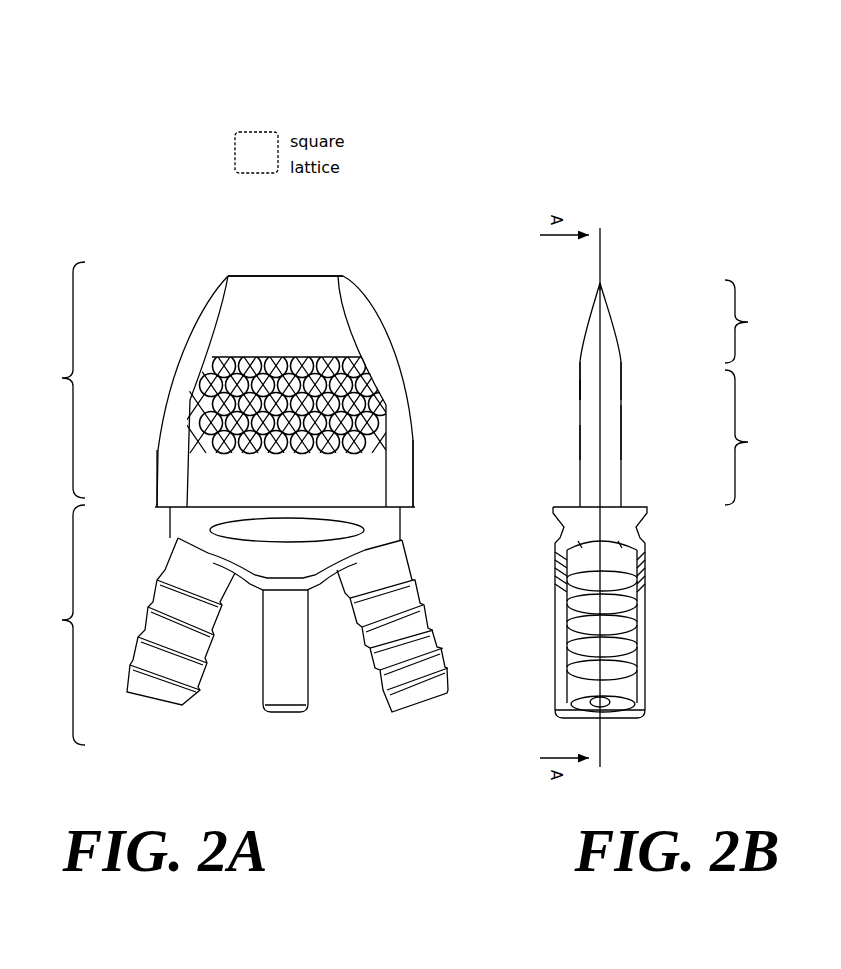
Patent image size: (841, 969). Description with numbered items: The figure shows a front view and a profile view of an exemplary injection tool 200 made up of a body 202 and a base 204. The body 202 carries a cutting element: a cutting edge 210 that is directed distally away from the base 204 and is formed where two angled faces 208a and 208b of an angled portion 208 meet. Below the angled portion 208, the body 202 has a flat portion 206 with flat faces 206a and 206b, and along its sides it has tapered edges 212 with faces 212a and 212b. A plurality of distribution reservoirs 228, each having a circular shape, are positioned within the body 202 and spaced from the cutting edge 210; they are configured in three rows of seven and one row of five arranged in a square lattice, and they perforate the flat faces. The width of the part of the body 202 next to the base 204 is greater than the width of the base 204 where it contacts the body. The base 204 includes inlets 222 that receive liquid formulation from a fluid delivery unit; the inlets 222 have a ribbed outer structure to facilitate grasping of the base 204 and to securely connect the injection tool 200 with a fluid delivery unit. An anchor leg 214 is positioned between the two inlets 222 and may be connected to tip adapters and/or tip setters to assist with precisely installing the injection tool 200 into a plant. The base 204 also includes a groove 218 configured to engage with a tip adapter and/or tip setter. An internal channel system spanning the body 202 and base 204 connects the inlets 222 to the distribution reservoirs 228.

In FIG. 2A, the injection tool 200 is at (118, 196).
In FIG. 2B, the injection tool 200 is at (518, 196).
In FIG. 2A, the body 202 is at (49, 380).
In FIG. 2A, the base 204 is at (49, 625).
In FIG. 2B, the flat portion 206 is at (758, 437).
In FIG. 2A, the flat face 206a is at (280, 473).
In FIG. 2B, the flat face 206a is at (575, 440).
In FIG. 2B, the flat face 206b is at (630, 440).
In FIG. 2B, the angled portion 208 is at (758, 321).
In FIG. 2A, the angled face 208a is at (280, 308).
In FIG. 2B, the angled face 208a is at (587, 312).
In FIG. 2B, the angled face 208b is at (614, 312).
In FIG. 2A, the cutting edge 210 is at (286, 271).
In FIG. 2B, the cutting edge 210 is at (607, 272).
In FIG. 2A, the tapered edges 212 is at (185, 338).
In FIG. 2B, the tapered edges 212 is at (605, 362).
In FIG. 2A, the face 212a is at (188, 384).
In FIG. 2B, the face 212a is at (596, 390).
In FIG. 2B, the face 212b is at (615, 416).
In FIG. 2A, the anchor leg 214 is at (292, 660).
In FIG. 2B, the anchor leg 214 is at (641, 687).
In FIG. 2A, the groove 218 is at (295, 530).
In FIG. 2B, the groove 218 is at (564, 530).
In FIG. 2B, the inlets 222 is at (606, 716).
In FIG. 2A, the distribution reservoirs 228 is at (366, 404).